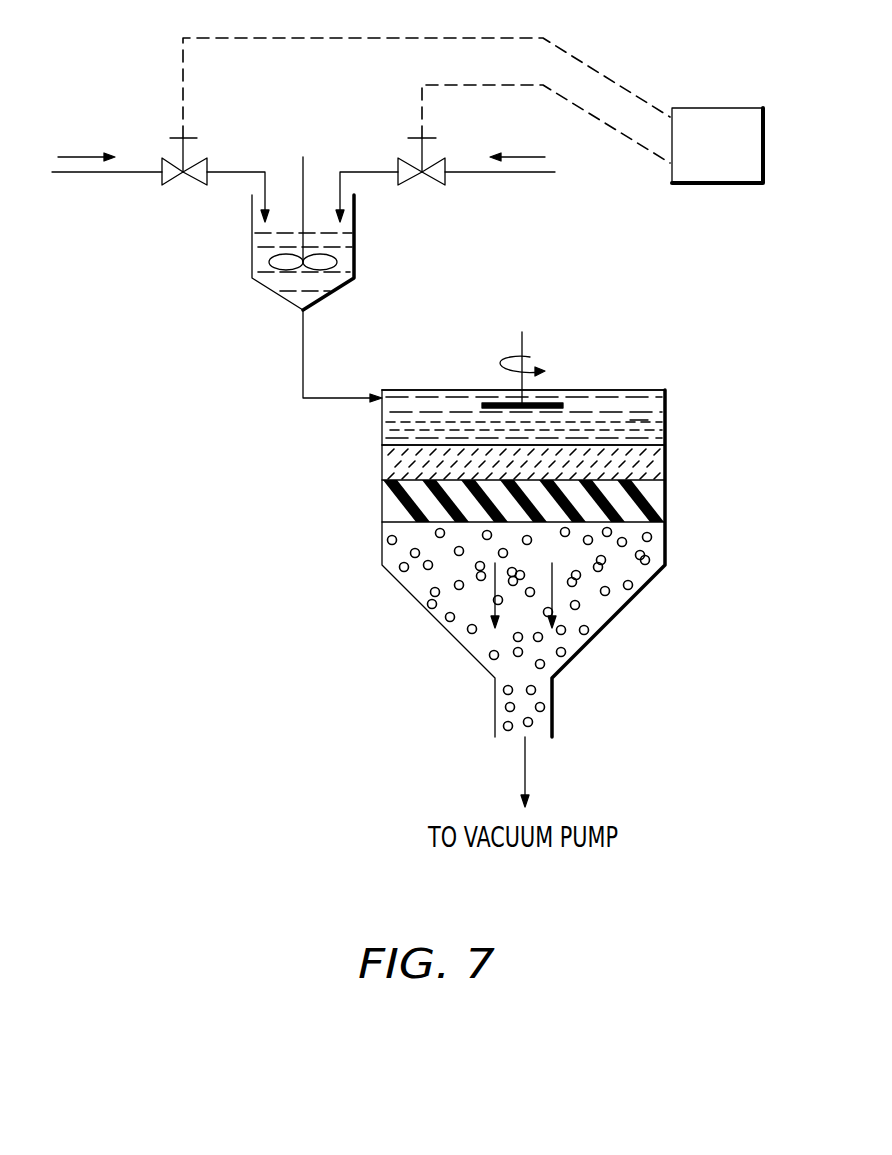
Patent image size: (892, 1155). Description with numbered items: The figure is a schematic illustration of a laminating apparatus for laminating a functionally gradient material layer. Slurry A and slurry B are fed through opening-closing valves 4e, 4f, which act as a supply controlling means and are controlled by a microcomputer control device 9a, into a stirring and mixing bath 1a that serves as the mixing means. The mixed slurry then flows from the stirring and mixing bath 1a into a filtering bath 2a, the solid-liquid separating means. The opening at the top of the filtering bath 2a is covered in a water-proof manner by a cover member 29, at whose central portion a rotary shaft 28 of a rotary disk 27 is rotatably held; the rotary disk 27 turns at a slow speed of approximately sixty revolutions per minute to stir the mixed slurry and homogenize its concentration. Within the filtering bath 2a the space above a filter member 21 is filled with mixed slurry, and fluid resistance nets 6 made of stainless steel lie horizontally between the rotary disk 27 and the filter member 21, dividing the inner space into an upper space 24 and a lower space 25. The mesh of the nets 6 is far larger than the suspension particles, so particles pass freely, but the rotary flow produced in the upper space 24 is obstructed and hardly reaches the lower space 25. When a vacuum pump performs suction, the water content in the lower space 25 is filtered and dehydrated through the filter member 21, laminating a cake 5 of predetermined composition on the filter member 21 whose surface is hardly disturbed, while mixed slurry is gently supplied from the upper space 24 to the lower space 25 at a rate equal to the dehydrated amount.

The microcomputer control device 9a is at (720, 122).
The opening-closing valve 4e is at (202, 183).
The opening-closing valve 4f is at (405, 185).
The stirring and mixing bath 1a is at (357, 267).
The filtering bath 2a is at (677, 461).
The upper space 24 is at (422, 407).
The lower space 25 is at (385, 432).
The rotary disk 27 is at (488, 400).
The rotary shaft 28 is at (500, 360).
The cover member 29 is at (603, 388).
The fluid resistance nets 6 is at (648, 428).
The cake 5 is at (385, 507).
The filter member 21 is at (655, 505).